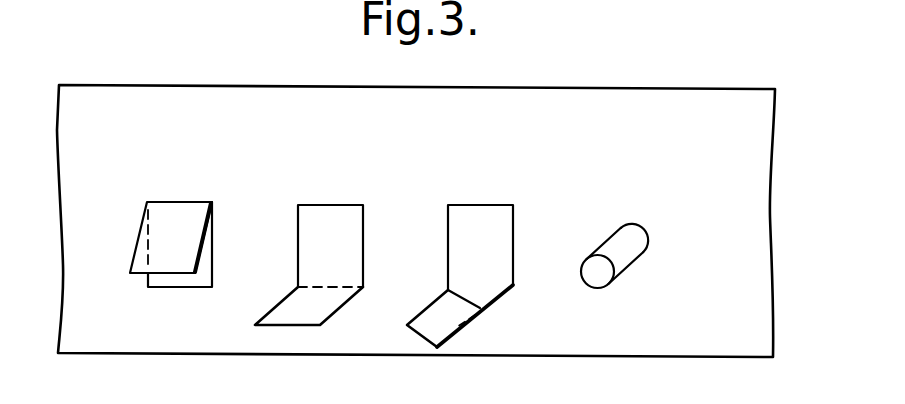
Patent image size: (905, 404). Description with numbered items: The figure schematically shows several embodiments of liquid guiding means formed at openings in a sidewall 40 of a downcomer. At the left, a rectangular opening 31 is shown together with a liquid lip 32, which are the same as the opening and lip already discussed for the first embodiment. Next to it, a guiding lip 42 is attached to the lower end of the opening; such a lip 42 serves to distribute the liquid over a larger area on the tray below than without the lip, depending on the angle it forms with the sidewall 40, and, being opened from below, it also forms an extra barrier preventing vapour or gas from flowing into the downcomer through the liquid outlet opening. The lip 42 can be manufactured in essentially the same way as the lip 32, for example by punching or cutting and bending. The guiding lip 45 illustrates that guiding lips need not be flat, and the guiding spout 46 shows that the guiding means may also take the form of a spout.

The sidewall 40 is at (670, 88).
The rectangular opening 31 is at (158, 288).
The liquid lip 32 is at (137, 243).
The liquid guiding lip 42 is at (280, 300).
The guiding lip 45 is at (430, 303).
The guiding spout 46 is at (636, 265).